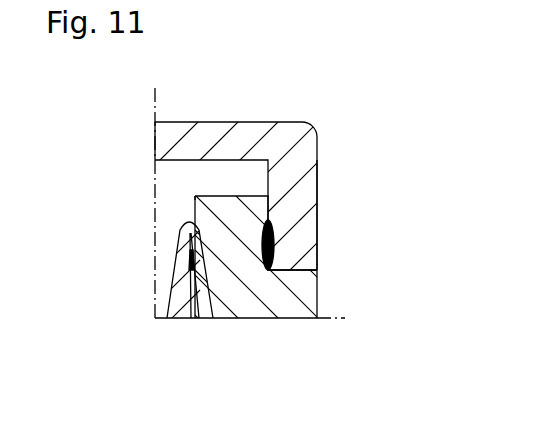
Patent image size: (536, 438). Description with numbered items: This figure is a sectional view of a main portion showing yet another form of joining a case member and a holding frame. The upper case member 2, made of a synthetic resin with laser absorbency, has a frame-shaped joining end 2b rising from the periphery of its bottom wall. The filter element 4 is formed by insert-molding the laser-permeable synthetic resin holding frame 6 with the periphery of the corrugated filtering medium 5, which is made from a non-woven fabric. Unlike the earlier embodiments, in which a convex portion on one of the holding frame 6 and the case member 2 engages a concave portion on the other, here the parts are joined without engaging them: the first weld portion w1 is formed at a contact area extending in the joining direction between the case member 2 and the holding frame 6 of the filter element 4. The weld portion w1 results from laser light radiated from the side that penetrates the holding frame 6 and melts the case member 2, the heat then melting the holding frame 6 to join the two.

The upper case member 2 is at (192, 111).
The joining end 2b is at (310, 191).
The filter element 4 is at (246, 332).
The filtering medium 5 is at (172, 277).
The holding frame 6 is at (193, 197).
The first weld portion w1 is at (274, 240).